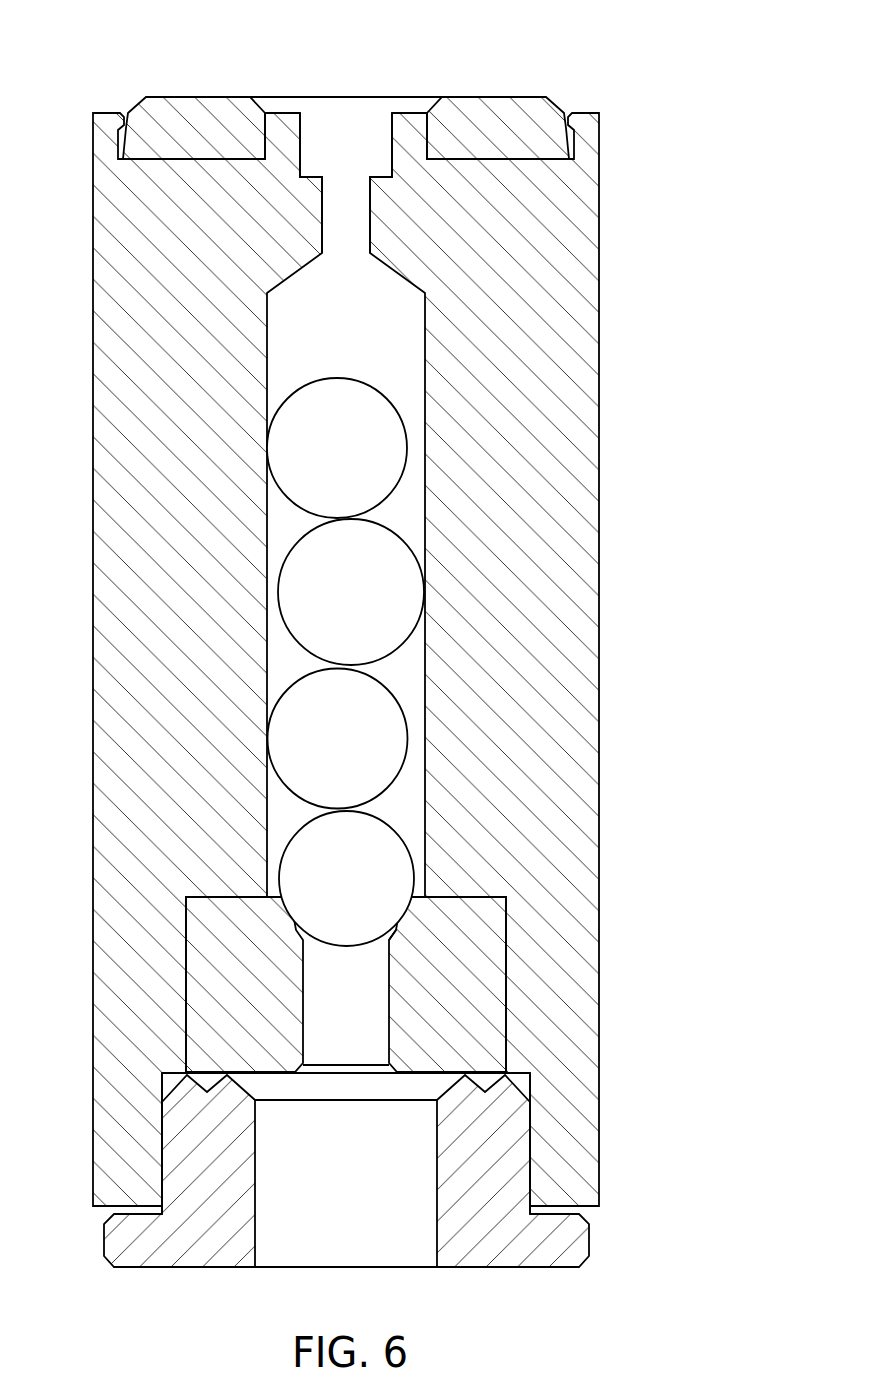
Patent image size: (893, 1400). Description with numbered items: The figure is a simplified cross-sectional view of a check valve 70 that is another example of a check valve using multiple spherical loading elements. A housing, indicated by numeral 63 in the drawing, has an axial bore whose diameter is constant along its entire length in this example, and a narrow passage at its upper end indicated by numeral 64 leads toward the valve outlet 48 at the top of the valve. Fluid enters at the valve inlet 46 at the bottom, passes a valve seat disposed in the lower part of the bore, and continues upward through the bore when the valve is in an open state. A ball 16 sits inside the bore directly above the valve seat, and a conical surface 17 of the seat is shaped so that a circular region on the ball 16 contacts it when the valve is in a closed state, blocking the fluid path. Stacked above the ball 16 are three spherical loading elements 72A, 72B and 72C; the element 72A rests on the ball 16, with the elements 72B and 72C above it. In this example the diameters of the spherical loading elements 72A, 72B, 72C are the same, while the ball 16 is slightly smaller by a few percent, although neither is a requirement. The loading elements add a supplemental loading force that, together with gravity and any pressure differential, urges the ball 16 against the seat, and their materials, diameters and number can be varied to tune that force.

The valve outlet 48 is at (369, 98).
The check valve 70 is at (731, 223).
The inlet passage 64 is at (324, 187).
The housing body 63 is at (93, 522).
The spherical loading element 72C is at (358, 464).
The spherical loading element 72B is at (375, 609).
The spherical loading element 72A is at (360, 756).
The ball 16 is at (360, 891).
The conical surface 17 is at (395, 911).
The valve inlet 46 is at (312, 1267).